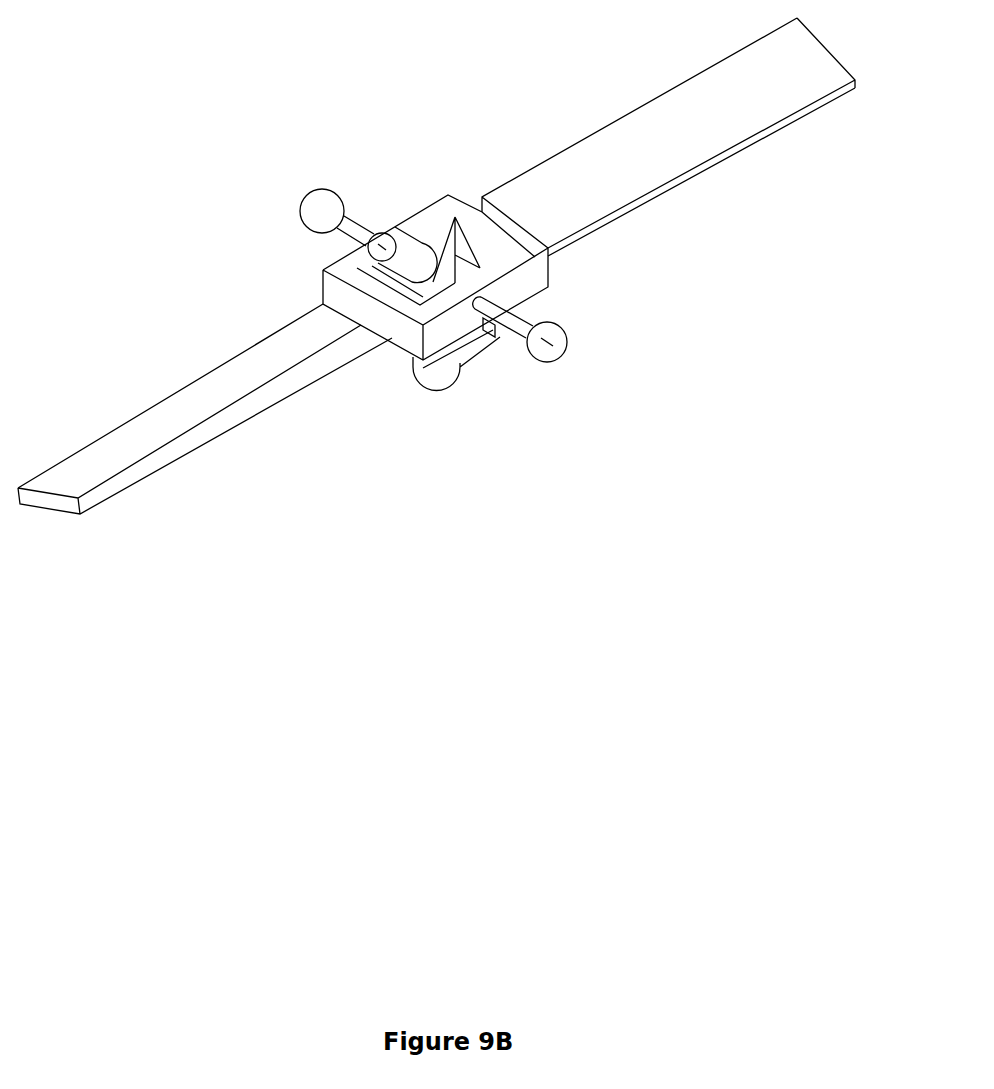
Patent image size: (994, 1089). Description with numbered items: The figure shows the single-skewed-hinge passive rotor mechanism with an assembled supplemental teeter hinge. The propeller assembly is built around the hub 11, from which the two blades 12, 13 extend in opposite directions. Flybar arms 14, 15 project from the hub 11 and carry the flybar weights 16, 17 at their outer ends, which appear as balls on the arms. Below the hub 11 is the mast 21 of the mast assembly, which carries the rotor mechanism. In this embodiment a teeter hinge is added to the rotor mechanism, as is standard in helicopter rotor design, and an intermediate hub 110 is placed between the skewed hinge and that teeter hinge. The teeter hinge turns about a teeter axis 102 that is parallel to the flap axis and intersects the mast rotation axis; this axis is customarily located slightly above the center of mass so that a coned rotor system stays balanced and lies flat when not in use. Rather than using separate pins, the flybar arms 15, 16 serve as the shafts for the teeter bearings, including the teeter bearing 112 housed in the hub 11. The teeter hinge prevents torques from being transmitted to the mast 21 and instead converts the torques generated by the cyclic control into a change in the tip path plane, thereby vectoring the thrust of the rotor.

The hub 11 is at (320, 293).
The blade 12 is at (147, 412).
The blade 13 is at (550, 158).
The flybar arm 14 is at (528, 317).
The flybar arm 15 is at (342, 238).
The flybar weight 16 is at (577, 340).
The flybar weight 17 is at (296, 211).
The mast 21 is at (472, 363).
The teeter axis 102 is at (285, 193).
The intermediate hub 110 is at (465, 258).
The teeter bearing 112 is at (497, 297).